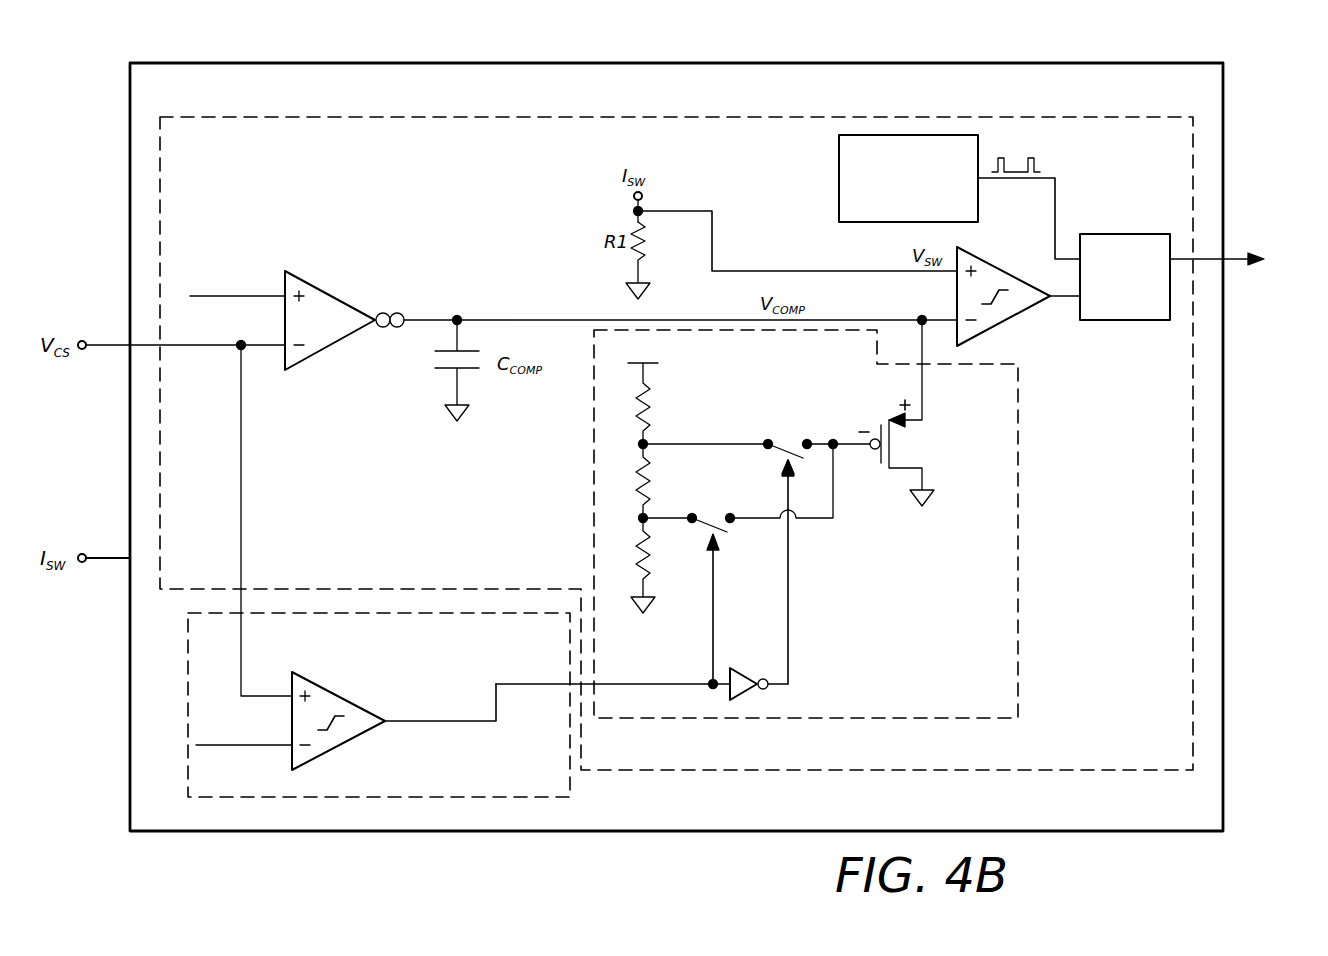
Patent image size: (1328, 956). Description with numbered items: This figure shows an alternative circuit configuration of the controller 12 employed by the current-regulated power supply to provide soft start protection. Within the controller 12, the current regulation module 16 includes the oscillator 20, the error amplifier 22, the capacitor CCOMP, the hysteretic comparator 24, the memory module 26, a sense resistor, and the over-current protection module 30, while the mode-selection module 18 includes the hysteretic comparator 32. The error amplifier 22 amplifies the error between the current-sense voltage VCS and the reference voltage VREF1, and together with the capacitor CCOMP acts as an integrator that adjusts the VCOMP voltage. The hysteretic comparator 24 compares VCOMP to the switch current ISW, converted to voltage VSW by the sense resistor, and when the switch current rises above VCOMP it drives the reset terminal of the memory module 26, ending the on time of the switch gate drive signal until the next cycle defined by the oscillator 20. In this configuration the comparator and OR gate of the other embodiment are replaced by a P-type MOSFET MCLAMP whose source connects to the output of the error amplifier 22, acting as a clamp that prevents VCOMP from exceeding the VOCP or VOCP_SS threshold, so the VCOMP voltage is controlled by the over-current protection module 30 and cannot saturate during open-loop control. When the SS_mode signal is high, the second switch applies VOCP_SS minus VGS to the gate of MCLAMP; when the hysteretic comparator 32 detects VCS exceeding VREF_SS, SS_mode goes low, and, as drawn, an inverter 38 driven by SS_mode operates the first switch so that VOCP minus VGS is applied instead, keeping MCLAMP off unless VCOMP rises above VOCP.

The controller 12 is at (130, 135).
The current regulation module 16 is at (303, 117).
The mode-selection module 18 is at (188, 675).
The oscillator 20 is at (839, 185).
The error amplifier 22 is at (335, 285).
The hysteretic comparator 24 is at (995, 271).
The memory module 26 is at (1108, 234).
The over-current protection module 30 is at (1018, 642).
The hysteretic comparator 32 is at (333, 690).
The inverter 38 is at (745, 685).